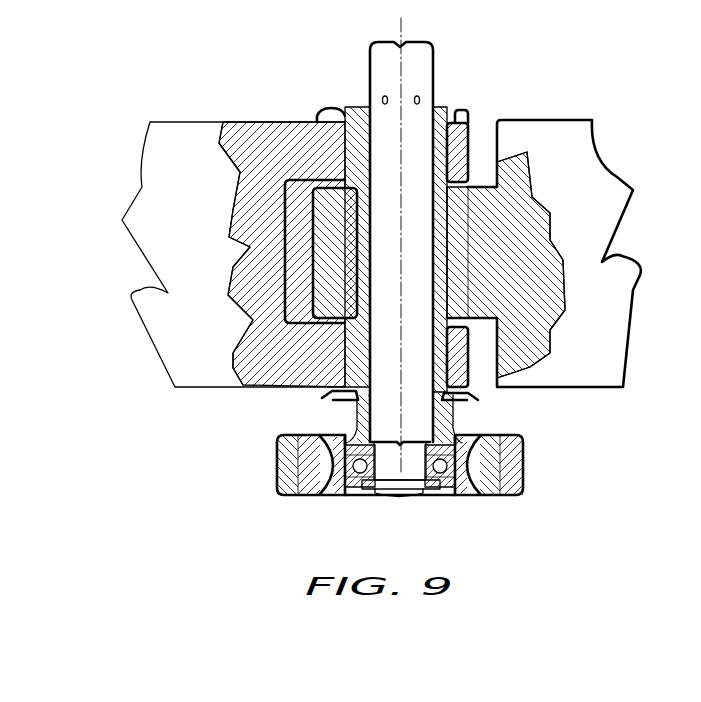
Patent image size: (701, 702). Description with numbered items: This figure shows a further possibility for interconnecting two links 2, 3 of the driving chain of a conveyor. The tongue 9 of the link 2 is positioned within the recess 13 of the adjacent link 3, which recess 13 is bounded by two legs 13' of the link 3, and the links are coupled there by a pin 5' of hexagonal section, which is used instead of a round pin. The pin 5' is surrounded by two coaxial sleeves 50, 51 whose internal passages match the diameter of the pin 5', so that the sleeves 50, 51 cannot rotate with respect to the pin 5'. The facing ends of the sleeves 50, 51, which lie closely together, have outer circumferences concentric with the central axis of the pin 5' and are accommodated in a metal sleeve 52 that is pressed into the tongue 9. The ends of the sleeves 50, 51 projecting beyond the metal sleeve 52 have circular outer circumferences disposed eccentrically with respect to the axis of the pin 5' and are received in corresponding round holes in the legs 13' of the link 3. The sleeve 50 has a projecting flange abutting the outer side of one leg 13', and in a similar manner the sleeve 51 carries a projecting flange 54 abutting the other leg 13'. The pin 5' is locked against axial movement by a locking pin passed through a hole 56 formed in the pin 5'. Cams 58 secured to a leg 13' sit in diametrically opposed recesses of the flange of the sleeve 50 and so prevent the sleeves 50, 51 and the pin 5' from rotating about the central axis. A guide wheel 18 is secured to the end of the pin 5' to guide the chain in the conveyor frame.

The link 2 is at (622, 177).
The link 3 is at (142, 187).
The pin 5' is at (424, 264).
The tongue 9 is at (525, 206).
The recess 13 is at (286, 251).
The legs 13' is at (282, 263).
The guide wheels 18 is at (518, 465).
The sleeve 50 is at (357, 107).
The sleeve 51 is at (445, 396).
The metal sleeve 52 is at (465, 257).
The flange 54 is at (337, 395).
The hole 56 is at (422, 100).
The cams 58 is at (320, 108).